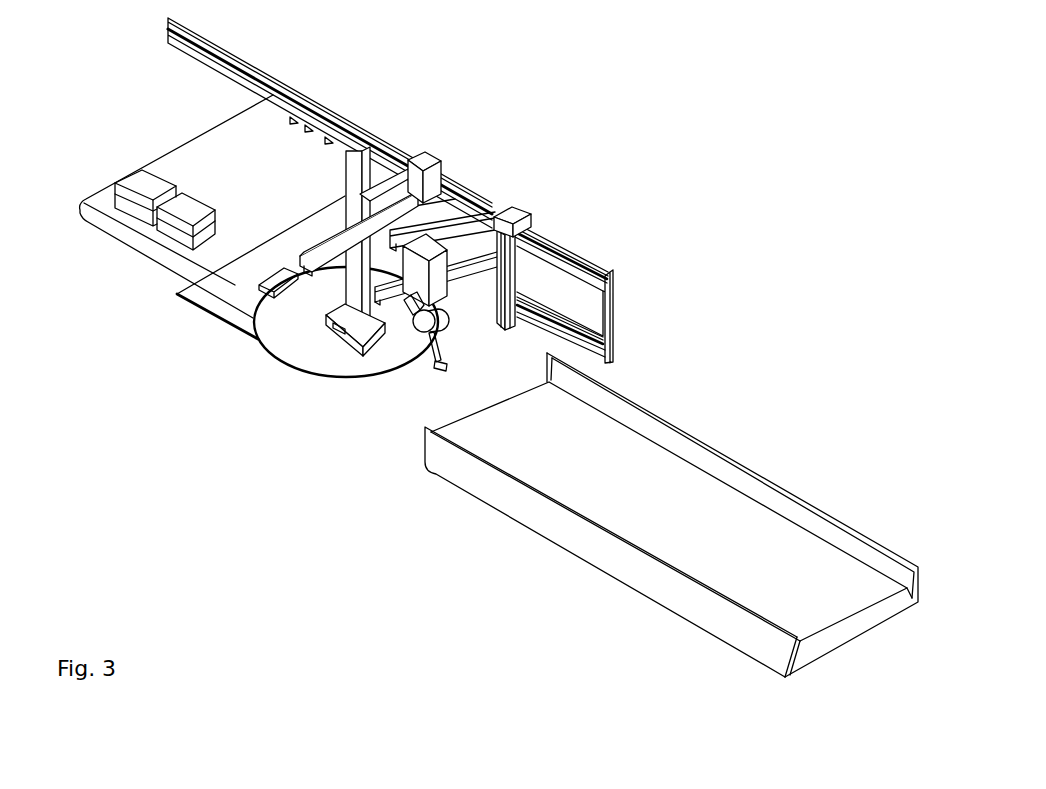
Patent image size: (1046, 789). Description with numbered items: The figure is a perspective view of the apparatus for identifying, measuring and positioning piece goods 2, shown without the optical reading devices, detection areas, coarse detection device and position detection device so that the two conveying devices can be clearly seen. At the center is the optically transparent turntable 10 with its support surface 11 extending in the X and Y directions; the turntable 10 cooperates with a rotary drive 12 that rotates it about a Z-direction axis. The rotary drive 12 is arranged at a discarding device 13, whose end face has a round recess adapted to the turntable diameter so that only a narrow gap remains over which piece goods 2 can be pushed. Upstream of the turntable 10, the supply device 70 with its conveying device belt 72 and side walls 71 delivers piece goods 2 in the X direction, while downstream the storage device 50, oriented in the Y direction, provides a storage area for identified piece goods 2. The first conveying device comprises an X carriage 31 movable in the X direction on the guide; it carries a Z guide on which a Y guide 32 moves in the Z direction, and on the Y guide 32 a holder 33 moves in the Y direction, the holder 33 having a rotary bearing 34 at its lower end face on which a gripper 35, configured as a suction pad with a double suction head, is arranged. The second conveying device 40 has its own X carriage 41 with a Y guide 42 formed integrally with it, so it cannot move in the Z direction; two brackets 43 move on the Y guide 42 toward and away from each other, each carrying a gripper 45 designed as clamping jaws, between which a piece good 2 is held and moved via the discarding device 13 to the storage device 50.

The piece goods 2 is at (372, 337).
The turntable 10 is at (344, 378).
The support surface 11 is at (308, 353).
The rotary drive 12 is at (215, 300).
The discarding device 13 is at (200, 312).
The X carriage 31 is at (512, 212).
The Y guide 32 is at (477, 250).
The holder 33 is at (441, 284).
The rotary bearing 34 is at (441, 328).
The gripper 35 is at (432, 364).
The second conveying device 40 is at (308, 102).
The X carriage 41 is at (428, 160).
The Y guide 42 is at (383, 200).
The brackets 43 is at (349, 248).
The gripper 45 is at (356, 333).
The storage device 50 is at (155, 122).
The supply device 70 is at (664, 515).
The side walls 71 is at (495, 490).
The conveying device belt 72 is at (660, 515).